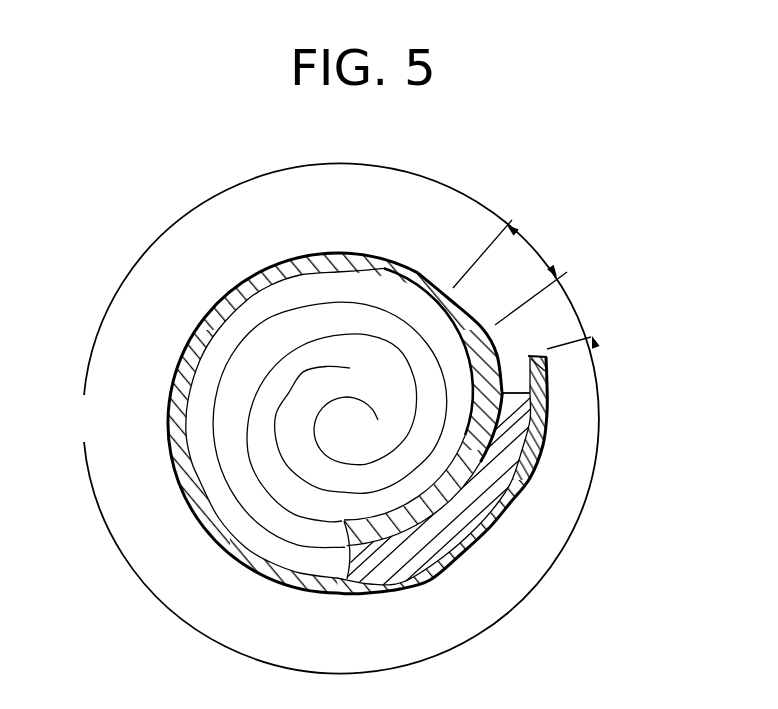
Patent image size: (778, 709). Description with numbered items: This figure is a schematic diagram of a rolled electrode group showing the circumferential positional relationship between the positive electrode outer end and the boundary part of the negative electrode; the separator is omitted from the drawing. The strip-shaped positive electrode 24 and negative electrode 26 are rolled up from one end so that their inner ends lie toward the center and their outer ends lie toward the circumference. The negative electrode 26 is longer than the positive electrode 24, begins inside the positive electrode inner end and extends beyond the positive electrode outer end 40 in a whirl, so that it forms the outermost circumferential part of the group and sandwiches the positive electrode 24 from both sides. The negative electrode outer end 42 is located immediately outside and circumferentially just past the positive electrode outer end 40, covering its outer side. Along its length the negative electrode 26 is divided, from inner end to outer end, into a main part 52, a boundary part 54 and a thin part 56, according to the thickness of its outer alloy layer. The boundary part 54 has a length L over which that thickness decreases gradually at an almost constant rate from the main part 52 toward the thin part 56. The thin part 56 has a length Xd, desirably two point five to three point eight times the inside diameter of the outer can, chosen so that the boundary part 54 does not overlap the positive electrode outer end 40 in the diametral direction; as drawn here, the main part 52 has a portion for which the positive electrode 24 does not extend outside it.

The positive electrode 24 is at (403, 558).
The negative electrode 26 is at (444, 520).
The positive electrode outer end 40 is at (547, 413).
The negative electrode outer end 42 is at (536, 355).
The main part 52 is at (457, 482).
The boundary part 54 is at (457, 323).
The thin part 56 is at (346, 255).
The length of the thin part Xd is at (332, 419).
The length of the boundary part L is at (510, 272).